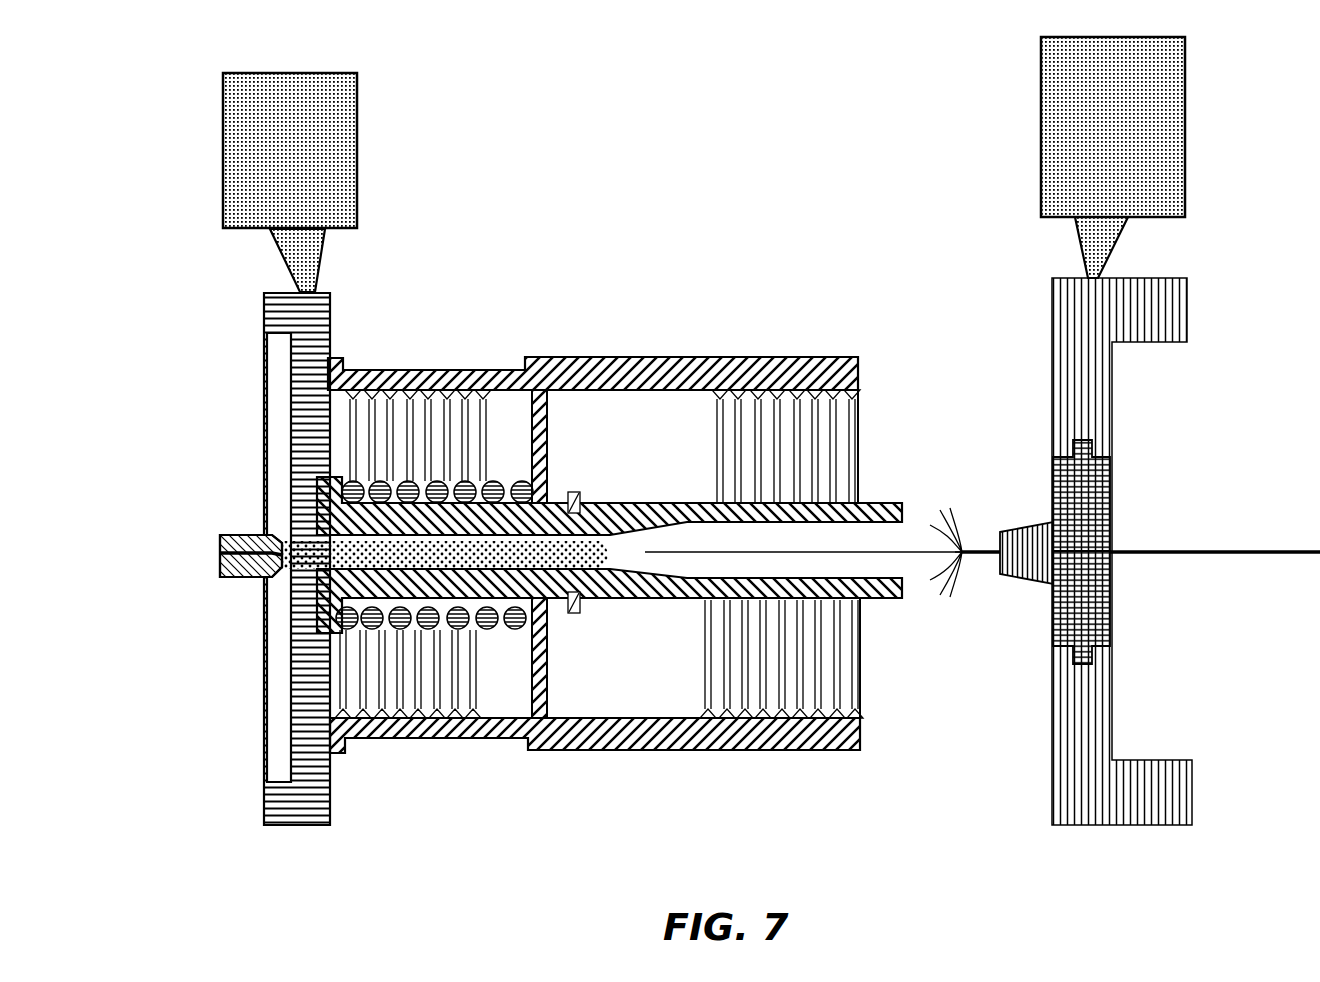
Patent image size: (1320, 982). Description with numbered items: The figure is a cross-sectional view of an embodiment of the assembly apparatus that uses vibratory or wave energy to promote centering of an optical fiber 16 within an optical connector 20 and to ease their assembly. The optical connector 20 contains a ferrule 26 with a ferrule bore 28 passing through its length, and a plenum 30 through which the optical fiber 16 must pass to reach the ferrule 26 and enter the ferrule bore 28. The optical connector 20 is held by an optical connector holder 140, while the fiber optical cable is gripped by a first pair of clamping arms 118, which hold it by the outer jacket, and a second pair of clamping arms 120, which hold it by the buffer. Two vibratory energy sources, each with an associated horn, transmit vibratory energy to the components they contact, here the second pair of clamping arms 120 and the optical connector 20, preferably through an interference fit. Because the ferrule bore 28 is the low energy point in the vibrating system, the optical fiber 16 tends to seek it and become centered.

The optical fiber 16 is at (912, 551).
The optical connector 20 is at (608, 356).
The ferrule 26 is at (254, 580).
The ferrule bore 28 is at (218, 556).
The plenum 30 is at (680, 592).
The first pair of clamping arms 118 is at (1112, 590).
The second pair of clamping arms 120 is at (1112, 480).
The optical connector holder 140 is at (262, 305).